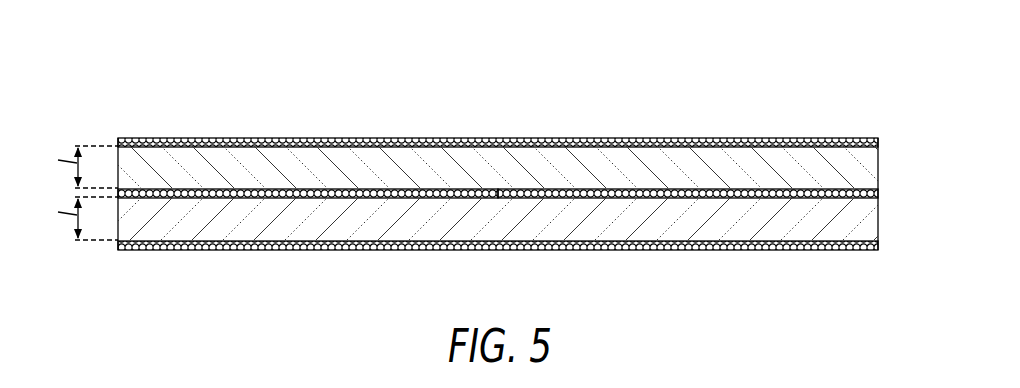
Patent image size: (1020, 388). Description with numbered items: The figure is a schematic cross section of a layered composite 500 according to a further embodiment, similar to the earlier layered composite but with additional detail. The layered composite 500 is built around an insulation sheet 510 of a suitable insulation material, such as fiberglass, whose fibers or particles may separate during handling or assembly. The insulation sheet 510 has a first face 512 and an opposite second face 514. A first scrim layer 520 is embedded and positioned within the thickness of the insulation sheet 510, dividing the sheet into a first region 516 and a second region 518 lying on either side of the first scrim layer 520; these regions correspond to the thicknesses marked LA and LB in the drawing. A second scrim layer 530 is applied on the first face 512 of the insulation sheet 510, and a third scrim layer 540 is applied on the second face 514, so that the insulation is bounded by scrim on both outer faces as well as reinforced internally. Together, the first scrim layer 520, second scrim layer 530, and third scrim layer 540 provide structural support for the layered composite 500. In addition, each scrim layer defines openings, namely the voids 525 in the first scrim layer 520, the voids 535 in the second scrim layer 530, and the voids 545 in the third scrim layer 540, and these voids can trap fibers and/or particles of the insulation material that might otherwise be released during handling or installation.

The layered composite 500 is at (784, 72).
The insulation sheet 510 is at (668, 221).
The first face 512 is at (849, 137).
The second face 514 is at (849, 251).
The first region 516 is at (116, 153).
The second region 518 is at (116, 228).
The first scrim layer 520 is at (545, 185).
The voids 525 is at (670, 185).
The second scrim layer 530 is at (237, 135).
The voids 535 is at (362, 135).
The third scrim layer 540 is at (250, 251).
The voids 545 is at (388, 251).